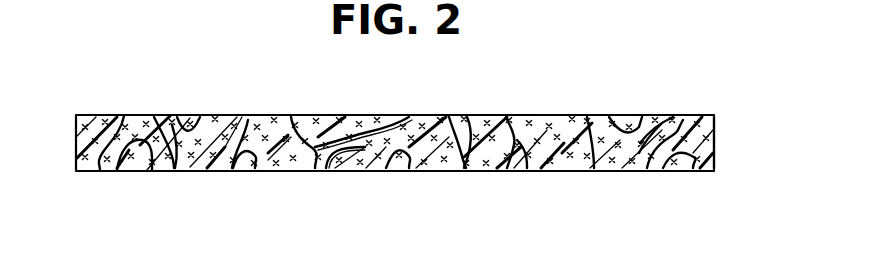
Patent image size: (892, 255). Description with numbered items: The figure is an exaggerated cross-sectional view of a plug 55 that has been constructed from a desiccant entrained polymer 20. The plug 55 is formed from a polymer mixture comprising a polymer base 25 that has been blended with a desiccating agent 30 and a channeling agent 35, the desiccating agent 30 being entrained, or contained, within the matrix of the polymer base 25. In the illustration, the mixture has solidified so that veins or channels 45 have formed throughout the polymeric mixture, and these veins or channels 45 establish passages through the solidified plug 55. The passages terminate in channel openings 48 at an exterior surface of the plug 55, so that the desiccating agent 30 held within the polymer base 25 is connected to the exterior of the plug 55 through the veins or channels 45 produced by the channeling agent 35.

The desiccant entrained polymer 20 is at (607, 97).
The polymer base 25 is at (105, 117).
The desiccating agent 30 is at (323, 171).
The channeling agent 35 is at (207, 117).
The veins or channels 45 is at (168, 115).
The channel openings 48 is at (450, 115).
The plug 55 is at (735, 135).